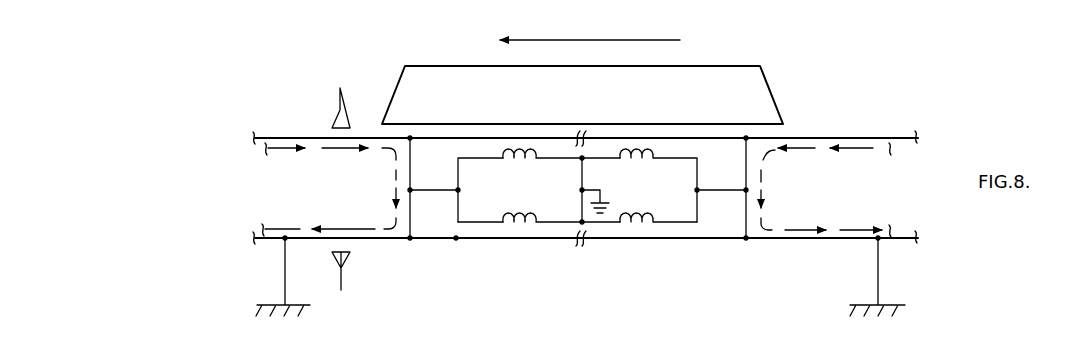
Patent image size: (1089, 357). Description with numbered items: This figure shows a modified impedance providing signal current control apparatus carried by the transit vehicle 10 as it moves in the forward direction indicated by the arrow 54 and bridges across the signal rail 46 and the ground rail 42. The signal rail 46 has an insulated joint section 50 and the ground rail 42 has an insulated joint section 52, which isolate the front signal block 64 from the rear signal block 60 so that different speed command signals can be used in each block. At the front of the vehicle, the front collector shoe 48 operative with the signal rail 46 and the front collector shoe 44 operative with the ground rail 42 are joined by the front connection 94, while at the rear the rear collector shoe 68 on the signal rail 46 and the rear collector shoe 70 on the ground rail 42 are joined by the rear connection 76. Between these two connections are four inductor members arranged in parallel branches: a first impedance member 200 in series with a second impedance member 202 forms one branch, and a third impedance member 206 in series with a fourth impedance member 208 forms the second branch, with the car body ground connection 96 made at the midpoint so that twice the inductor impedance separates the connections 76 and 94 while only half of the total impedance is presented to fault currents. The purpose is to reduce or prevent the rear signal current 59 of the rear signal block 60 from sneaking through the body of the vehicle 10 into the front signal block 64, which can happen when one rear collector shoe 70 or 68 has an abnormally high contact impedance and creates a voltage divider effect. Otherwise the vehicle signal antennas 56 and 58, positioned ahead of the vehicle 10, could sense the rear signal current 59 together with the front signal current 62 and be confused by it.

The vehicle 10 is at (642, 102).
The arrow 54 is at (620, 40).
The signal rail 46 is at (284, 138).
The ground rail 42 is at (456, 240).
The vehicle signal antenna 56 is at (337, 122).
The vehicle signal antenna 58 is at (350, 258).
The front signal current 62 is at (356, 150).
The front signal block 64 is at (292, 199).
The front collector shoe 48 is at (412, 142).
The front connection 94 is at (414, 190).
The front collector shoe 44 is at (412, 236).
The second impedance member 202 is at (508, 162).
The fourth impedance member 208 is at (510, 218).
The insulated joint section 50 is at (580, 158).
The insulated joint section 52 is at (580, 246).
The car body ground connection 96 is at (597, 189).
The first impedance member 200 is at (640, 165).
The third impedance member 206 is at (640, 217).
The rear collector shoe 68 is at (744, 141).
The rear connection 76 is at (744, 170).
The rear collector shoe 70 is at (744, 236).
The rear signal block 60 is at (816, 192).
The rear signal current 59 is at (880, 150).